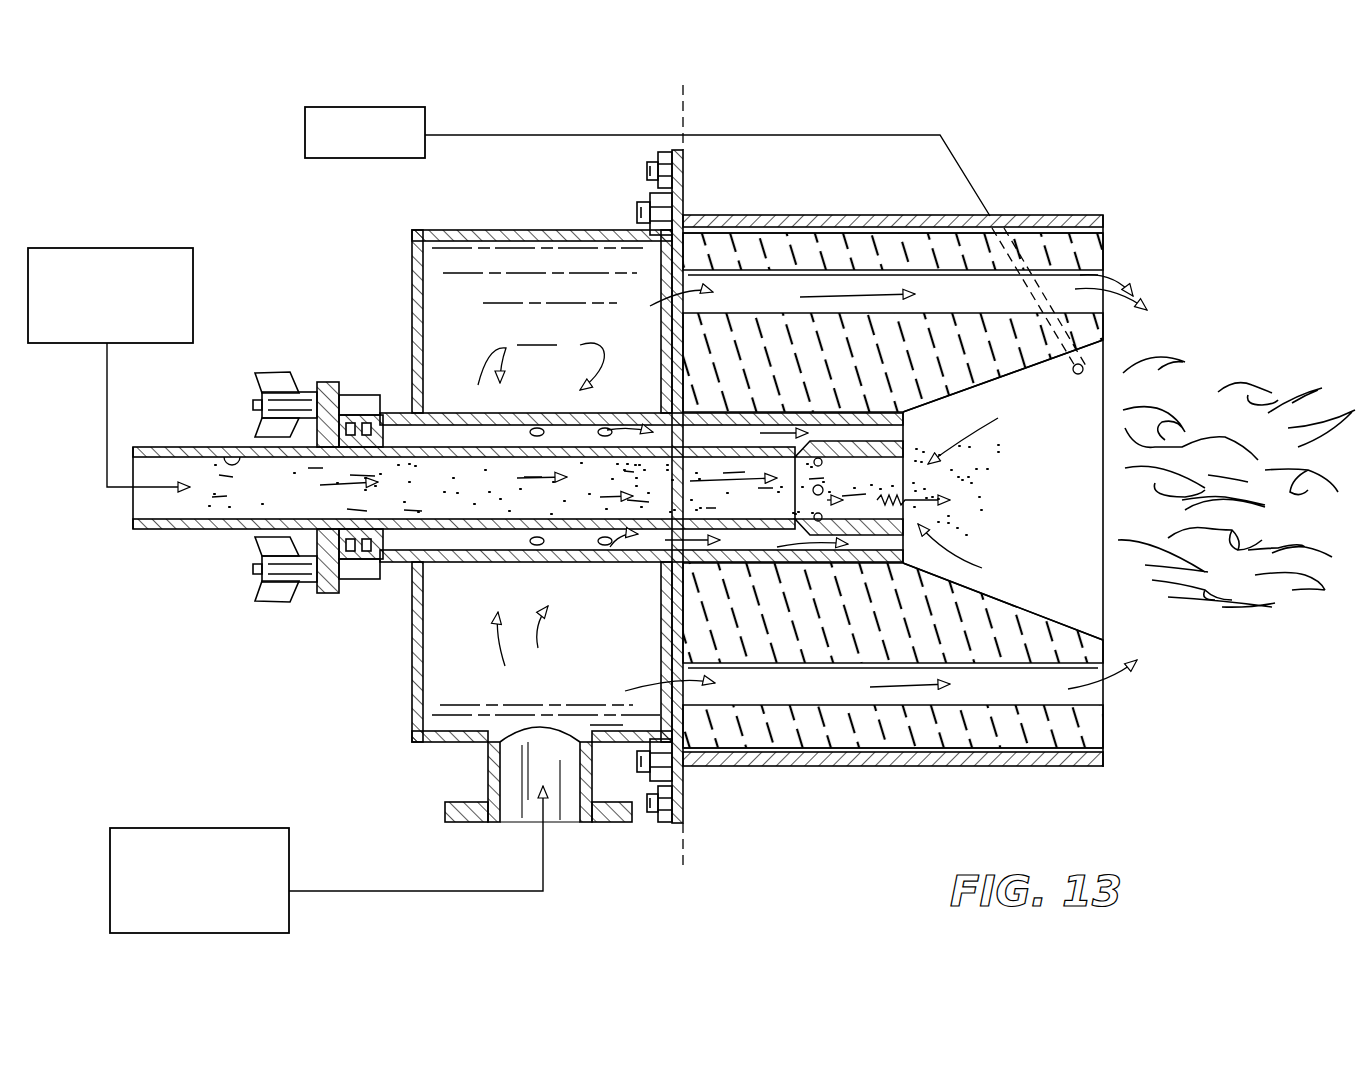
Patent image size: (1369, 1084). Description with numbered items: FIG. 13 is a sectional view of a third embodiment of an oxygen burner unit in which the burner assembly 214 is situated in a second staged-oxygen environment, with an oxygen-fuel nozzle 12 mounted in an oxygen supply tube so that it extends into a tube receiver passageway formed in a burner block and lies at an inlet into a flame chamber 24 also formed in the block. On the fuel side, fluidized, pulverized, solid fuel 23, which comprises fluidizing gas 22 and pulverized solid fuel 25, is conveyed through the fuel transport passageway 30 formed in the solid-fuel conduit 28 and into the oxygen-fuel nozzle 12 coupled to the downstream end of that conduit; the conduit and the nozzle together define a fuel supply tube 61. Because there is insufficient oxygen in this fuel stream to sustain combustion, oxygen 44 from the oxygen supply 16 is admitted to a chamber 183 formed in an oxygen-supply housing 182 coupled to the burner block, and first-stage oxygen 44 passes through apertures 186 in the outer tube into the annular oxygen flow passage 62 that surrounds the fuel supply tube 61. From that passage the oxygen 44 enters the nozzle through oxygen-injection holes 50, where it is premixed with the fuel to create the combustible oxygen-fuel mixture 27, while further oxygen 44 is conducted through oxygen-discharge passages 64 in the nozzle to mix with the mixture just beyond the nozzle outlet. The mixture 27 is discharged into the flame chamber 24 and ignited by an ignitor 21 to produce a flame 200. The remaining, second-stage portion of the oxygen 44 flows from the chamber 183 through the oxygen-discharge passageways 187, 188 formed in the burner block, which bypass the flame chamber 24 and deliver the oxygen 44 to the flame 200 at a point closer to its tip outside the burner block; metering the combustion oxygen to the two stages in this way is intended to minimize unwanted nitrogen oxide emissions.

The burner assembly 214 is at (258, 198).
The ignitor 21 is at (378, 161).
The fluidized, pulverized, solid fuel 23 is at (200, 278).
The oxygen supply 16 is at (235, 828).
The solid-fuel conduit 28 is at (176, 441).
The fuel transport passageway 30 is at (229, 456).
The pulverized solid fuel 25 is at (248, 496).
The fluidizing gas 22 is at (463, 478).
The fuel supply tube 61 is at (437, 441).
The annular oxygen flow passage 62 is at (488, 433).
The apertures 186 is at (605, 420).
The oxygen-supply housing 182 is at (411, 299).
The chamber 183 is at (549, 309).
The flame chamber 24 is at (1086, 572).
The oxygen-discharge passageway 188 is at (1100, 275).
The oxygen-discharge passageway 187 is at (1085, 700).
The oxygen-fuel nozzle 12 is at (850, 440).
The oxygen-discharge passages 64 is at (879, 538).
The oxygen-injection holes 50 is at (810, 512).
The combustible oxygen-fuel mixture 27 is at (882, 510).
The oxygen 44 is at (497, 383).
The flame 200 is at (1250, 383).